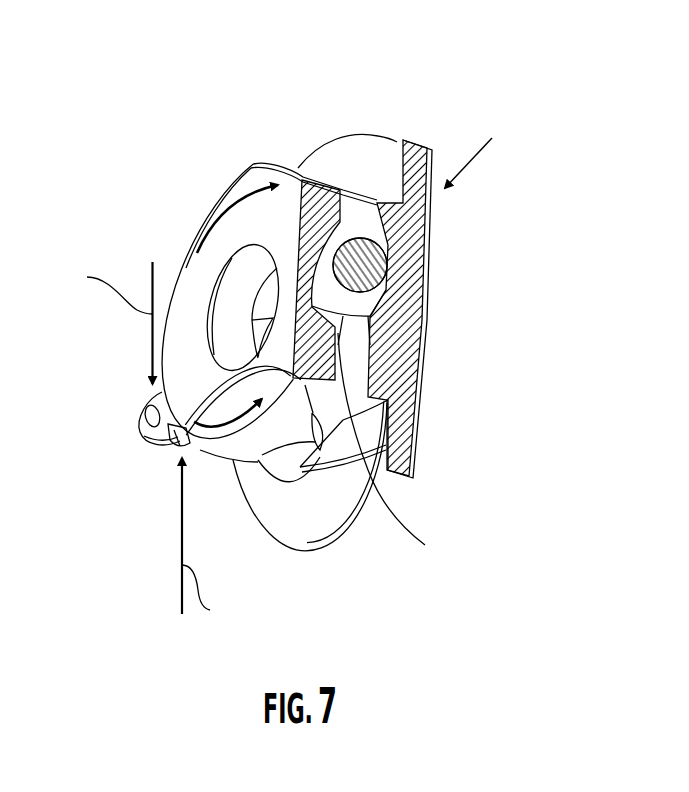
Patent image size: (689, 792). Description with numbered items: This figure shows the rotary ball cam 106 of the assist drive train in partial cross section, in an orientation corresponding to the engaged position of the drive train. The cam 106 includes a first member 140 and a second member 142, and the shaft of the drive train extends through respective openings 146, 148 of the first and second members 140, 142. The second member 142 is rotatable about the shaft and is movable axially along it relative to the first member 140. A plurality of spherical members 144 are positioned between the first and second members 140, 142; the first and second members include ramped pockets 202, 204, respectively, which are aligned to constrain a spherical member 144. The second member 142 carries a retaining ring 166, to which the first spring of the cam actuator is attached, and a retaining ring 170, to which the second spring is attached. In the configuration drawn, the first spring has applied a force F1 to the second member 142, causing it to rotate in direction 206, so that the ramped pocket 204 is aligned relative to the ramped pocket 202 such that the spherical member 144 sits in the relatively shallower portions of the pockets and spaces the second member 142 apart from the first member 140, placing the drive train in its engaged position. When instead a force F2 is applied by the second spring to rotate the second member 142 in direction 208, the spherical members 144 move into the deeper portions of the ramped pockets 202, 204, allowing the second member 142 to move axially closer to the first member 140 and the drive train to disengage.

The cam 106 is at (473, 143).
The first member 140 is at (393, 140).
The second member 142 is at (297, 170).
The spherical member 144 is at (351, 238).
The opening 146 is at (394, 447).
The opening 148 is at (223, 303).
The retaining ring 166 is at (172, 446).
The retaining ring 170 is at (148, 437).
The ramped pocket 202 is at (388, 262).
The ramped pocket 204 is at (365, 310).
The direction 206 is at (241, 163).
The direction 208 is at (231, 437).
The force F1 is at (206, 546).
The force F2 is at (109, 318).